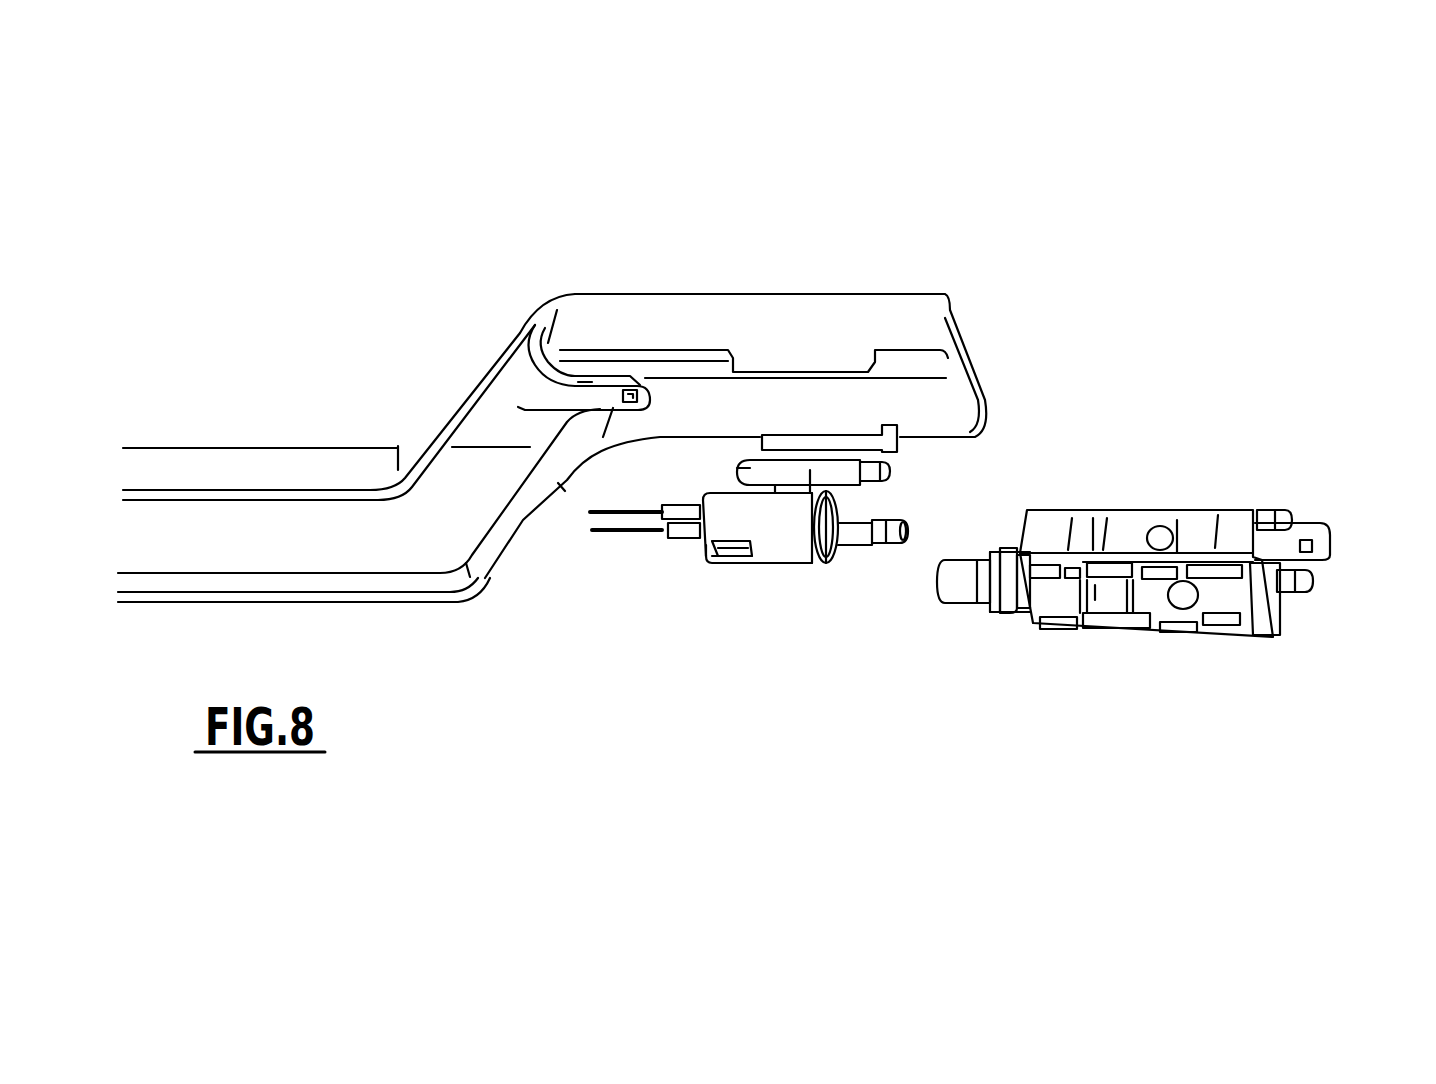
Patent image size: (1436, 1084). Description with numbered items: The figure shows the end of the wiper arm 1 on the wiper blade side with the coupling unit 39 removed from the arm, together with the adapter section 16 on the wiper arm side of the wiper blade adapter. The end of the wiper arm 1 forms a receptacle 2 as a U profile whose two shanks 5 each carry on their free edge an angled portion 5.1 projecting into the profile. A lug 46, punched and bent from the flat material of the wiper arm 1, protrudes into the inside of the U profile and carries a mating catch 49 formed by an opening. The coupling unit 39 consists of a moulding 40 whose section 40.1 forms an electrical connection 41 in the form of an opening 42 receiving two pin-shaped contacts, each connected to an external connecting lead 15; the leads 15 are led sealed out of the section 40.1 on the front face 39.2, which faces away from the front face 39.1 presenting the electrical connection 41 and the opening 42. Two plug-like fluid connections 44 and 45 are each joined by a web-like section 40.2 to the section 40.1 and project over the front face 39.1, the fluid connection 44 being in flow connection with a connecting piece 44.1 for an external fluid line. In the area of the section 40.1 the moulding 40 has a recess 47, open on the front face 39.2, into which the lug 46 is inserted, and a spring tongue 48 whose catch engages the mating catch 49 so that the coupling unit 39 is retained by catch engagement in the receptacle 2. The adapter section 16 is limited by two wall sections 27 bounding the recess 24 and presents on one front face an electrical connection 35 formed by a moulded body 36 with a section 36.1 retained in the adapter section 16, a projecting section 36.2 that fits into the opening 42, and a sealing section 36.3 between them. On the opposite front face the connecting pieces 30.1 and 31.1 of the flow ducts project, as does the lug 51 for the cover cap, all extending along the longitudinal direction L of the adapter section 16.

The wiper arm 1 is at (351, 378).
The receptacle 2 is at (807, 275).
The shank 5 is at (698, 312).
The angled portion 5.1 is at (838, 362).
The external connecting lead 15 is at (632, 533).
The adapter section on the wiper arm side 16 is at (1219, 474).
The recess 24 is at (1143, 615).
The wall section 27 is at (1093, 530).
The connecting piece 30.1 is at (1277, 517).
The connecting piece 31.1 is at (1298, 583).
The electrical connection 35 is at (977, 666).
The moulded body 36 is at (980, 535).
The section 36.1 is at (1038, 597).
The section 36.2 is at (967, 597).
The section 36.3 is at (994, 597).
The coupling unit 39 is at (724, 618).
The front face 39.1 is at (836, 516).
The front face 39.2 is at (708, 550).
The moulding 40 is at (786, 588).
The section 40.1 is at (808, 553).
The web-like section 40.2 is at (785, 498).
The electrical connection 41 is at (851, 576).
The opening 42 is at (835, 520).
The fluid connection 44 is at (838, 473).
The connecting piece 44.1 is at (747, 470).
The fluid connection 45 is at (923, 580).
The lug 46 is at (585, 385).
The recess 47 is at (747, 560).
The spring tongue 48 is at (715, 560).
The mating catch 49 is at (634, 398).
The lug 51 is at (1327, 530).
The longitudinal direction L is at (1343, 577).